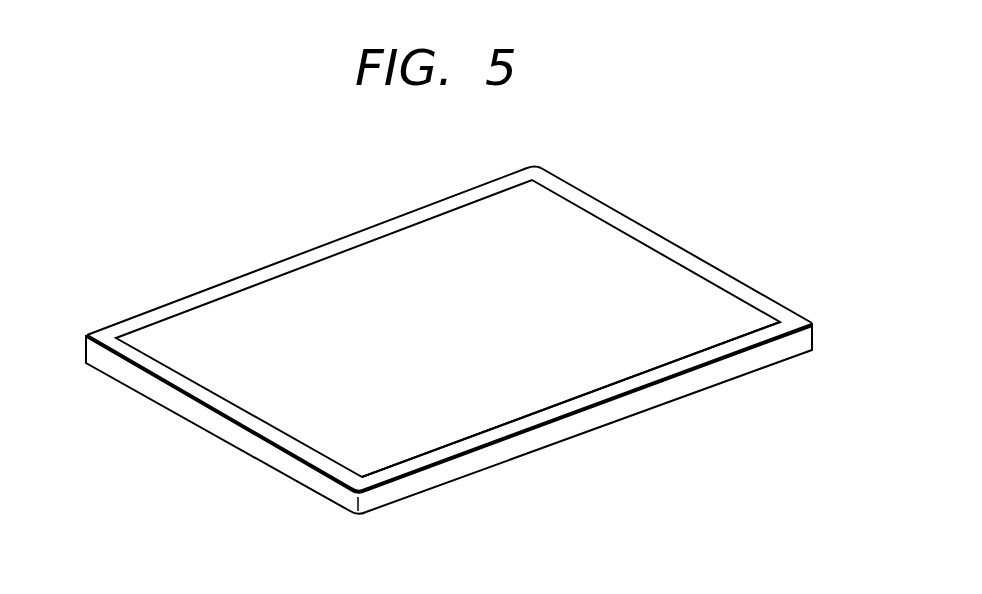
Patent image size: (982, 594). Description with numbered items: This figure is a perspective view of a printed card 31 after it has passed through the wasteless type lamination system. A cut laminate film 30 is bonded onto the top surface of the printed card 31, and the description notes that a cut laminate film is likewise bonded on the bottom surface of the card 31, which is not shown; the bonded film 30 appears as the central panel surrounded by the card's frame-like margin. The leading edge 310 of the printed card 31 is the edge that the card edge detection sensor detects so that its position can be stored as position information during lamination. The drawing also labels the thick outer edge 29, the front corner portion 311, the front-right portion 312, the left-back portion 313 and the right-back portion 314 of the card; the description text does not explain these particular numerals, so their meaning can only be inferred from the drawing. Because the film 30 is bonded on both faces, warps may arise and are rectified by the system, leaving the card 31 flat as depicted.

The outer edge of frame 29 is at (250, 417).
The cut laminate film 30 is at (588, 238).
The printed card 31 is at (710, 377).
The leading edge 310 is at (173, 405).
The frame front corner portion 311 is at (308, 462).
The frame front-right portion 312 is at (533, 423).
The frame left-back portion 313 is at (333, 242).
The frame right-back portion 314 is at (730, 282).